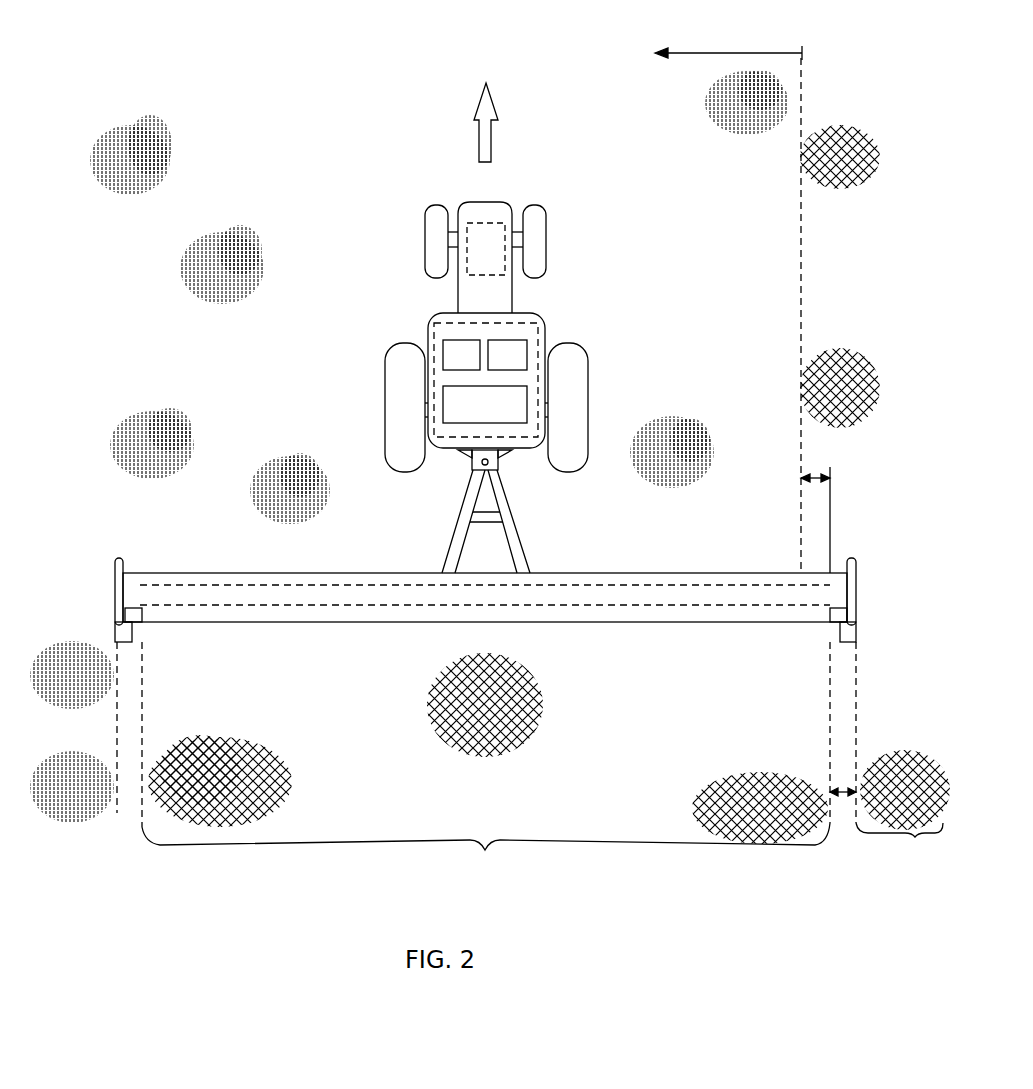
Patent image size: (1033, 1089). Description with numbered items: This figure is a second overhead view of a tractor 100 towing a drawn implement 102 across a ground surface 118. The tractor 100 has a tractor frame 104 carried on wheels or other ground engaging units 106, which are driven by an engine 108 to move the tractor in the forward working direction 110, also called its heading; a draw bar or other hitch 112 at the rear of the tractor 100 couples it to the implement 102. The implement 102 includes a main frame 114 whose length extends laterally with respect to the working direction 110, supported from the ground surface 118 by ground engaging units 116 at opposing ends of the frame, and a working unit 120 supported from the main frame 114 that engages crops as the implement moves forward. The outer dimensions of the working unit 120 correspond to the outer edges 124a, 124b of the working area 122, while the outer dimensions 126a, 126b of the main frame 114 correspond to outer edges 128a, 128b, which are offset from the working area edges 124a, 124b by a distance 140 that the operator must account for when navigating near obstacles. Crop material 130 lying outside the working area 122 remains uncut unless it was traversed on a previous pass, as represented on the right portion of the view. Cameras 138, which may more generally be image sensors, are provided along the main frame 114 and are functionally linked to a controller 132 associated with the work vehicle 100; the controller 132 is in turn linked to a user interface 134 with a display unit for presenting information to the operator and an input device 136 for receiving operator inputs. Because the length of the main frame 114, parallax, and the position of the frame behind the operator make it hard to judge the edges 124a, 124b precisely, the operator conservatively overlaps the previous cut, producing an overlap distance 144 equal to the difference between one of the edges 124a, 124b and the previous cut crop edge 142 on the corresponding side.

The tractor 100 is at (627, 205).
The drawn implement 102 is at (655, 572).
The tractor frame 104 is at (458, 290).
The ground engaging units 106 is at (425, 237).
The engine 108 is at (487, 223).
The working direction 110 is at (478, 145).
The hitch 112 is at (492, 463).
The main frame 114 is at (597, 623).
The ground engaging units 116 is at (122, 636).
The ground surface 118 is at (720, 405).
The working unit 120 is at (705, 605).
The working area 122 is at (485, 850).
The outer edge of working area 124a is at (142, 723).
The outer edge of working area 124b is at (830, 705).
The outer dimension of main frame 126a is at (113, 577).
The outer dimension of main frame 126b is at (858, 577).
The outer edge 128a is at (117, 723).
The outer edge 128b is at (856, 723).
The crop material 130 is at (695, 53).
The controller 132 is at (515, 405).
The user interface 134 is at (462, 355).
The input device 136 is at (513, 352).
The camera 138 is at (143, 615).
The distance 140 is at (842, 788).
The previous cut crop edge 142 is at (800, 302).
The overlap distance 144 is at (815, 473).